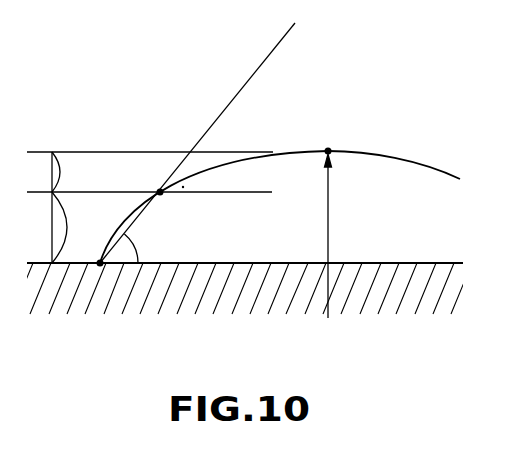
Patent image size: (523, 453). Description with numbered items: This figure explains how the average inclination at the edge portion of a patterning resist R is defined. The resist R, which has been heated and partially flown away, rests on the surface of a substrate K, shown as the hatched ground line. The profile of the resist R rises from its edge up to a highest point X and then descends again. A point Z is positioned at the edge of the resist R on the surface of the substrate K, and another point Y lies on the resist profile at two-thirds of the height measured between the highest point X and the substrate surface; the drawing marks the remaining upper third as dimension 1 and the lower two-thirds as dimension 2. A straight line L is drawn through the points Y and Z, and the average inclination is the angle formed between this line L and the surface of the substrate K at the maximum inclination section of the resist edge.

The substrate K is at (153, 283).
The line L is at (258, 70).
The highest point of resist X is at (326, 219).
The point Y is at (154, 179).
The point Z is at (99, 279).
The resist R is at (423, 242).
The height from point Y to apex 1 is at (66, 172).
The height of point Y above ground 2 is at (68, 227).